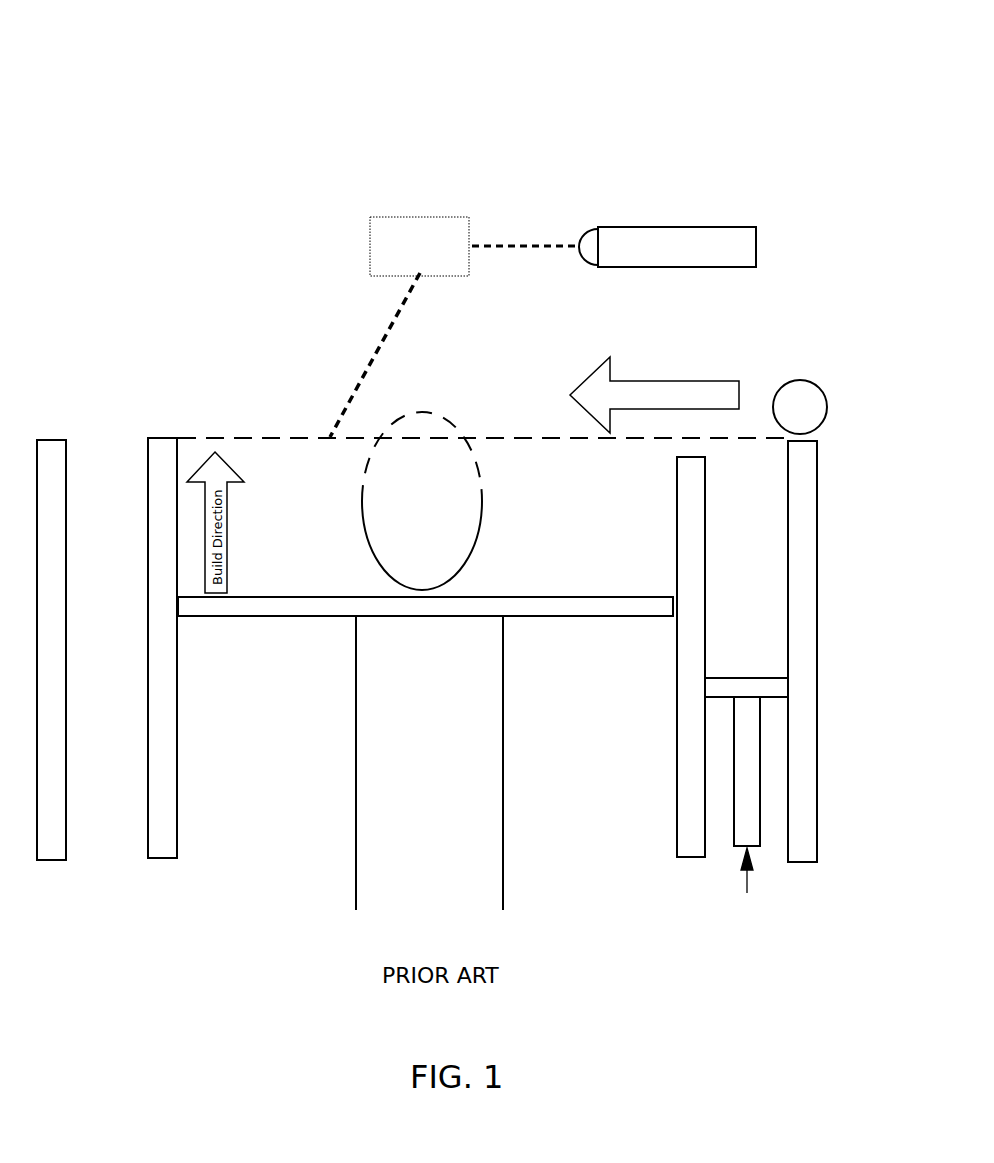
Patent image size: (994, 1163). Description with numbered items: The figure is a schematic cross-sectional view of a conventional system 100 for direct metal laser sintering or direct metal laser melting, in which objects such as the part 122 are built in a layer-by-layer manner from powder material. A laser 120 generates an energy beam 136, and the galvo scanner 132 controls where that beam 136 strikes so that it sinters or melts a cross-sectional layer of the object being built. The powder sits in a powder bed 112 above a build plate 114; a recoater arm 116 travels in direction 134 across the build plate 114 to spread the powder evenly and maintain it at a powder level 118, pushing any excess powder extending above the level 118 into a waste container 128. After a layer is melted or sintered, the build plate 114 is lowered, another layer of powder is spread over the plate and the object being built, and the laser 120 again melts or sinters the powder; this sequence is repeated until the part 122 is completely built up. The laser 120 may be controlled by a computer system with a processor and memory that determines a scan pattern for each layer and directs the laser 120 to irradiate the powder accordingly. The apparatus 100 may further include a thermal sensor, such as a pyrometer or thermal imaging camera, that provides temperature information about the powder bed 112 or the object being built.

The system 100 is at (218, 33).
The powder bed 112 is at (565, 497).
The build plate 114 is at (626, 597).
The recoater arm 116 is at (797, 380).
The powder level 118 is at (238, 437).
The laser 120 is at (622, 227).
The part 122 is at (362, 506).
The waste container 128 is at (130, 759).
The galvo scanner 132 is at (418, 217).
The direction 134 is at (587, 380).
The energy beam 136 is at (373, 357).